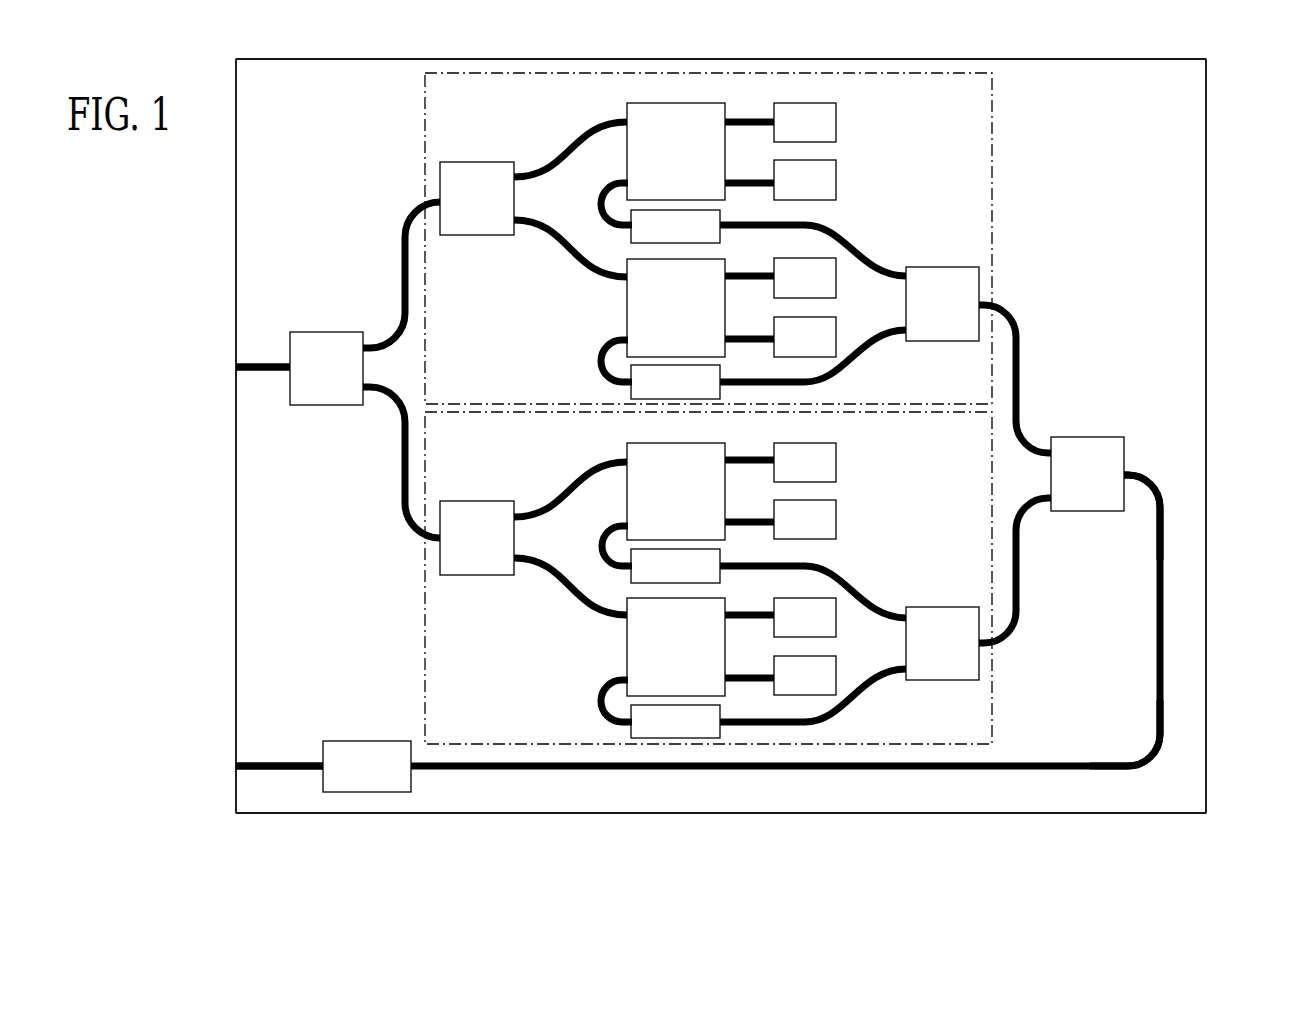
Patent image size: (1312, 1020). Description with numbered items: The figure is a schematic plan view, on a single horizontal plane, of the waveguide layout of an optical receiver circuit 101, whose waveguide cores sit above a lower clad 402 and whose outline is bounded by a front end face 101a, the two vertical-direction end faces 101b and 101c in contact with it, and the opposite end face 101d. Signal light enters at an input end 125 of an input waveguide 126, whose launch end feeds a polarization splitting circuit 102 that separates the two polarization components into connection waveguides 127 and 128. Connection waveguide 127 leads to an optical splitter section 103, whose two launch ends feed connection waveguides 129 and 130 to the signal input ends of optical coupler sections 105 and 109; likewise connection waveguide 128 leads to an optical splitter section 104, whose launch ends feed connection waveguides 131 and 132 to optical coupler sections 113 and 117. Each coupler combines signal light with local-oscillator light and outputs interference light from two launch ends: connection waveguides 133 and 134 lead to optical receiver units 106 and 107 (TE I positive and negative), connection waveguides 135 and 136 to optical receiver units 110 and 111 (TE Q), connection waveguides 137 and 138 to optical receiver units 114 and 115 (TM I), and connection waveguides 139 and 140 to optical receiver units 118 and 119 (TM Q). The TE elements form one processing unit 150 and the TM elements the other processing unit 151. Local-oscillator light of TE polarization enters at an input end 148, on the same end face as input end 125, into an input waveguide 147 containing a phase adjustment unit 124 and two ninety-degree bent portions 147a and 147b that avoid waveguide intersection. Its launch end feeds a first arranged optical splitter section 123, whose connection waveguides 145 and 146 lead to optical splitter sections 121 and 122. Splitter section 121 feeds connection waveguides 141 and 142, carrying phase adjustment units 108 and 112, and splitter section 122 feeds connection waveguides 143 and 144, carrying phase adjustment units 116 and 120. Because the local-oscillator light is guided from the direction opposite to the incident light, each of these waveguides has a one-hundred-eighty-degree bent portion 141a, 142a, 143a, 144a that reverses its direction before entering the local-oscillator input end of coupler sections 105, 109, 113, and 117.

The optical receiver circuit 101 is at (255, 58).
The end face 101a is at (235, 567).
The end face 101b is at (735, 814).
The end face 101c is at (735, 58).
The right side edge of substrate 101d is at (1207, 268).
The lower clad 402 is at (367, 78).
The processing unit 150 is at (993, 128).
The processing unit 151 is at (994, 707).
The input end 125 is at (236, 367).
The input waveguide 126 is at (263, 363).
The polarization splitting circuit 102 is at (346, 382).
The connection waveguide 127 is at (402, 272).
The connection waveguide 128 is at (402, 478).
The optical splitter section 103 is at (497, 212).
The optical splitter section 104 is at (497, 552).
The connection waveguide 129 is at (566, 150).
The connection waveguide 130 is at (571, 250).
The connection waveguide 131 is at (566, 490).
The connection waveguide 132 is at (571, 590).
The optical coupler section 105 is at (696, 165).
The optical receiver unit 106 is at (825, 136).
The optical receiver unit 107 is at (825, 194).
The phase adjustment unit 108 is at (696, 240).
The optical coupler section 109 is at (696, 322).
The optical receiver unit 110 is at (825, 292).
The optical receiver unit 111 is at (825, 350).
The phase adjustment unit 112 is at (696, 396).
The optical coupler section 113 is at (696, 505).
The optical receiver unit 114 is at (825, 476).
The optical receiver unit 115 is at (825, 533).
The phase adjustment unit 116 is at (696, 580).
The optical coupler section 117 is at (696, 660).
The optical receiver unit 118 is at (825, 631).
The optical receiver unit 119 is at (825, 689).
The phase adjustment unit 120 is at (696, 735).
The connection waveguide 133 is at (750, 119).
The connection waveguide 134 is at (750, 180).
The connection waveguide 135 is at (750, 273).
The connection waveguide 136 is at (750, 336).
The connection waveguide 137 is at (750, 457).
The connection waveguide 138 is at (750, 519).
The connection waveguide 139 is at (750, 612).
The connection waveguide 140 is at (750, 675).
The connection waveguide 141 is at (859, 254).
The 180-degree bent portion 141a is at (600, 204).
The connection waveguide 142 is at (858, 352).
The 180-degree bent portion 142a is at (600, 362).
The connection waveguide 143 is at (860, 594).
The 180-degree bent portion 143a is at (600, 545).
The connection waveguide 144 is at (858, 692).
The 180-degree bent portion 144a is at (600, 700).
The optical splitter section 121 is at (962, 318).
The optical splitter section 122 is at (962, 657).
The optical splitter section 123 is at (1108, 488).
The connection waveguide 145 is at (1021, 379).
The connection waveguide 146 is at (1021, 583).
The input waveguide 147 is at (272, 763).
The 90-degree bent portion 147a is at (1153, 758).
The 90-degree bent portion 147b is at (1157, 478).
The phase adjustment unit 124 is at (387, 780).
The input end 148 is at (236, 766).